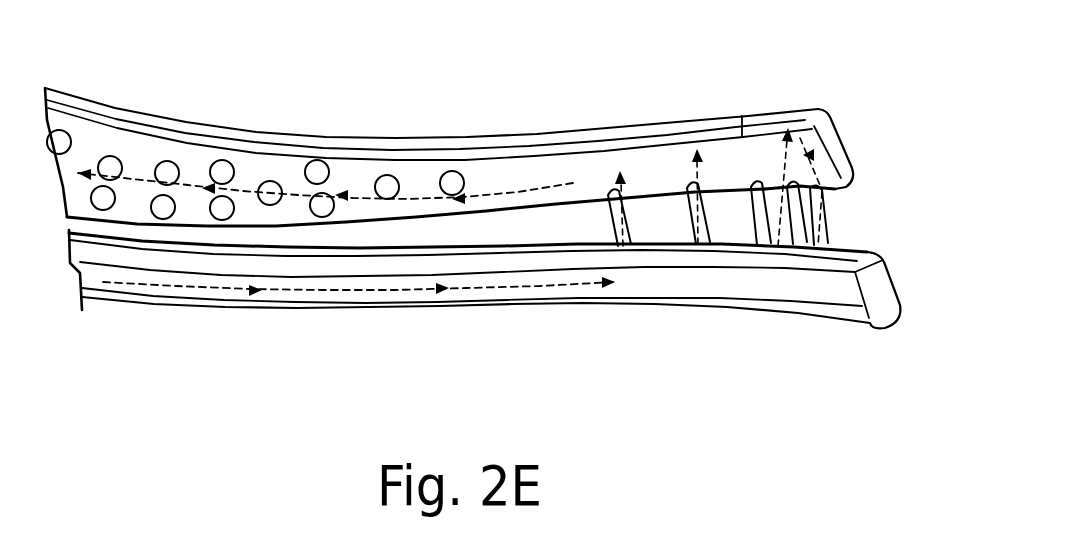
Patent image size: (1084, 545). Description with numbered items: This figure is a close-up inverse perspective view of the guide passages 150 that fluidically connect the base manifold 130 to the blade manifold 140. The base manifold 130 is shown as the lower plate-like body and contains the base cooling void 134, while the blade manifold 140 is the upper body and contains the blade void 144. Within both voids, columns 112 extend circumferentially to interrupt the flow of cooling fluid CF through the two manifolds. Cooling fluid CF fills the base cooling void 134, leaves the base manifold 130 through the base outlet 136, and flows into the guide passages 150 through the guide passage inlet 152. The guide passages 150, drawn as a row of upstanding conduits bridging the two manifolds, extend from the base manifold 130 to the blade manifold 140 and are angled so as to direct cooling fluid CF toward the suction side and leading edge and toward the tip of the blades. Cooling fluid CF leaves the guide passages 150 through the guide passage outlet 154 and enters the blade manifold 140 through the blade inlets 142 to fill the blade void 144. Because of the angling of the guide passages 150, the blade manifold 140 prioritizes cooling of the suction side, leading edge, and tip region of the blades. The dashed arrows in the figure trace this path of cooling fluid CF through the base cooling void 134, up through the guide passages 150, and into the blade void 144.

The columns 112 is at (271, 181).
The base manifold 130 is at (175, 290).
The base cooling void 134 is at (317, 295).
The blade manifold 140 is at (453, 160).
The blade void 144 is at (525, 183).
The blade inlets 142 is at (836, 168).
The guide passage outlet 154 is at (824, 190).
The guide passage inlet 152 is at (828, 243).
The base outlet 136 is at (700, 248).
The guide passages 150 is at (826, 244).
The cooling fluid CF is at (403, 290).